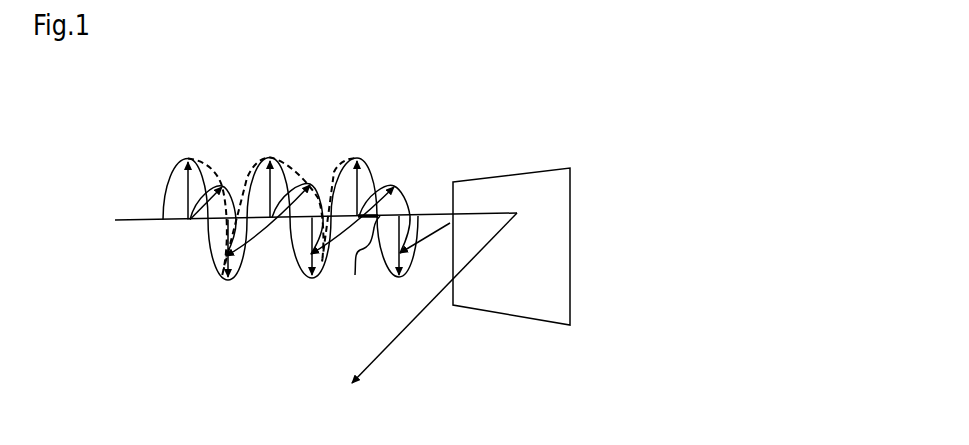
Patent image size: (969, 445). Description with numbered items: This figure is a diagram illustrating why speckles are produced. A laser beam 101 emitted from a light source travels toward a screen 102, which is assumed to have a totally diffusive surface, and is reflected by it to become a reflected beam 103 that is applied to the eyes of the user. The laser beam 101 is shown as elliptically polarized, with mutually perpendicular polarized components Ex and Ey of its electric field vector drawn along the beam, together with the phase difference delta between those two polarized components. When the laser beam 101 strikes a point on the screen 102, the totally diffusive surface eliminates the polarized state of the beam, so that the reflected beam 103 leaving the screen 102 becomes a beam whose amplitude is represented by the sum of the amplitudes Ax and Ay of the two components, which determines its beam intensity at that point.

The laser beam 101 is at (174, 167).
The screen 102 is at (527, 169).
The reflected beam 103 is at (411, 326).